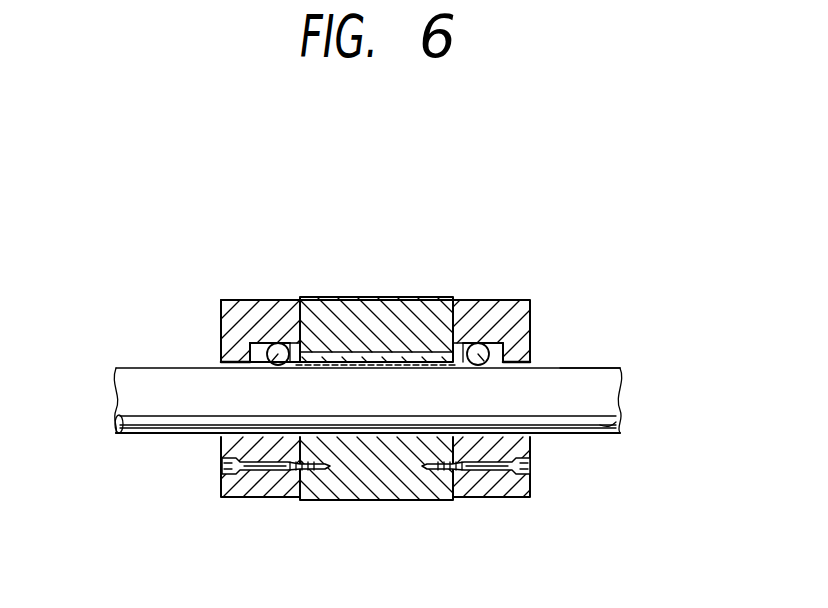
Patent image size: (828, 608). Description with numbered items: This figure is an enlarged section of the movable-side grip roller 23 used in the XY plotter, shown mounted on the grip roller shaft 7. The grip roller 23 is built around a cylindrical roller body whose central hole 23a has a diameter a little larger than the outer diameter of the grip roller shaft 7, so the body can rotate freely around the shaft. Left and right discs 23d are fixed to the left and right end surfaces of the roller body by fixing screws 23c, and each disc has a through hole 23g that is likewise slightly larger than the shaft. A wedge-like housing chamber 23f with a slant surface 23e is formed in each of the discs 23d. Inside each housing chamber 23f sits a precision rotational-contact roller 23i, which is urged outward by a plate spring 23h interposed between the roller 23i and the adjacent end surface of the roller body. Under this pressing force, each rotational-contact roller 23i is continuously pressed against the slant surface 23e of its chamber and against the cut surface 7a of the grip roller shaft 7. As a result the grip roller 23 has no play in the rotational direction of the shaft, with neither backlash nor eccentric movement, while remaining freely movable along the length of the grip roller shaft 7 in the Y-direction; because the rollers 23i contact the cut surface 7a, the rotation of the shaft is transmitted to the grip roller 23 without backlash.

The grip roller shaft 7 is at (612, 430).
The cut surface 7a is at (595, 368).
The movable-side grip roller 23 is at (300, 284).
The central hole 23a is at (355, 297).
The fixing screws 23c is at (252, 473).
The left and right discs 23d is at (232, 327).
The slant surface 23e is at (254, 345).
The wedge-like housing chamber 23f is at (221, 348).
The through holes 23g is at (221, 364).
The plate springs 23h is at (308, 348).
The precision rotational-contact rollers 23i is at (273, 363).